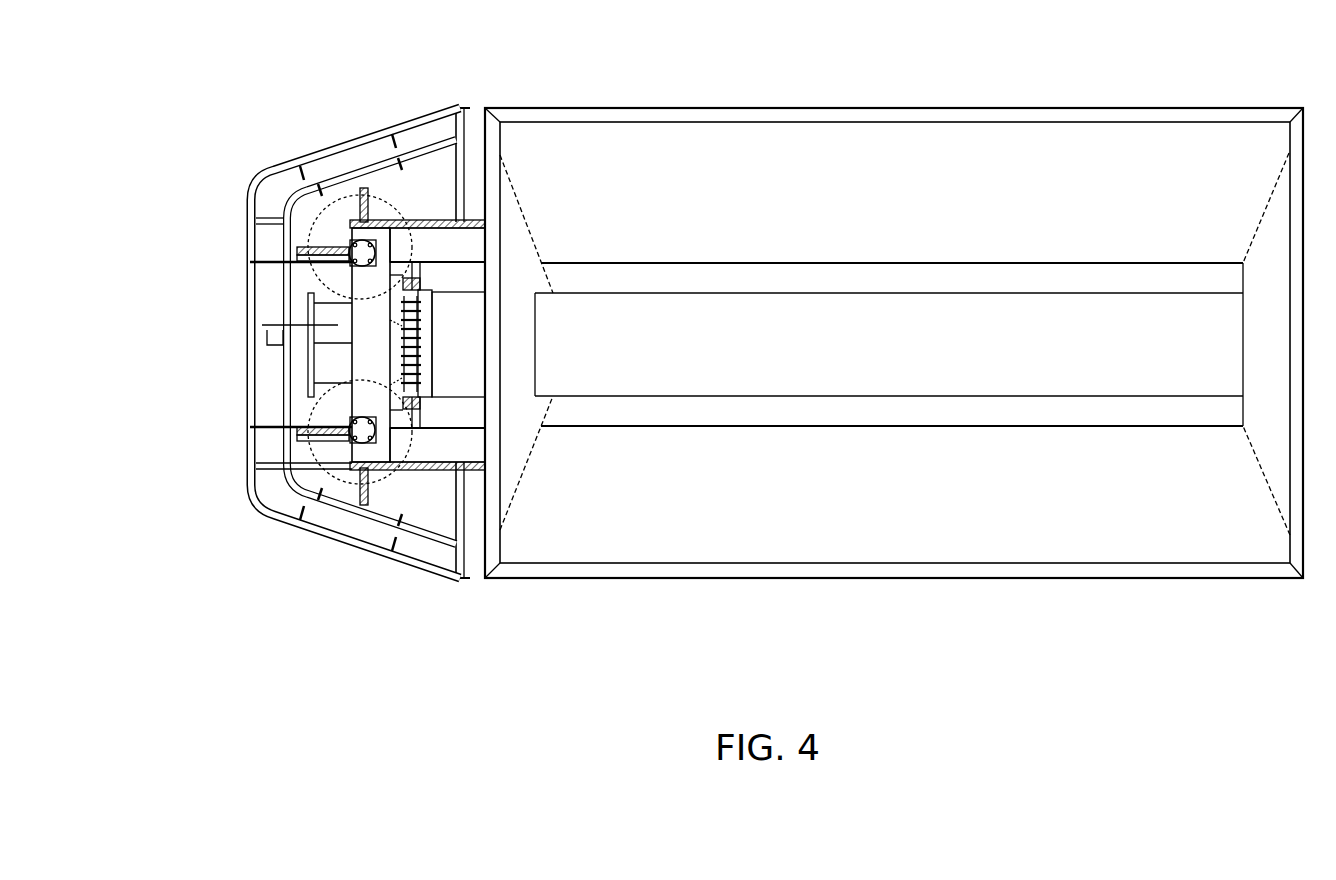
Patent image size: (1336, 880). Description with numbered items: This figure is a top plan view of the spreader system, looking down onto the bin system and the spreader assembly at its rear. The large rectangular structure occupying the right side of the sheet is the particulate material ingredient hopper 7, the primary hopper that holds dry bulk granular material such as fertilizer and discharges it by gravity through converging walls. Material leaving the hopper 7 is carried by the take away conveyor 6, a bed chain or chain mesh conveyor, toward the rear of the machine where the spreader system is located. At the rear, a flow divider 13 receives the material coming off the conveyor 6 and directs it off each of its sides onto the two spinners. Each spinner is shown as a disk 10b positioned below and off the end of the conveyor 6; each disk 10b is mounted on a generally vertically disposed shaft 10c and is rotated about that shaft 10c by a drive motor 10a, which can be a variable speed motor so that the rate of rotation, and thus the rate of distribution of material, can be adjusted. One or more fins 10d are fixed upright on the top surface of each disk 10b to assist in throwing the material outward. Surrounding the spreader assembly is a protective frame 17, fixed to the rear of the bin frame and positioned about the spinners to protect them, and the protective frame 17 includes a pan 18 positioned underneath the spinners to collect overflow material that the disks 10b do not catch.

The take away conveyor 6 is at (468, 356).
The particulate material ingredient hopper 7 is at (812, 176).
The drive motor 10a is at (346, 238).
The disk 10b is at (387, 214).
The shaft 10c is at (262, 180).
The fin 10d is at (366, 188).
The flow divider 13 is at (336, 326).
The protective frame 17 is at (247, 403).
The pan 18 is at (275, 299).